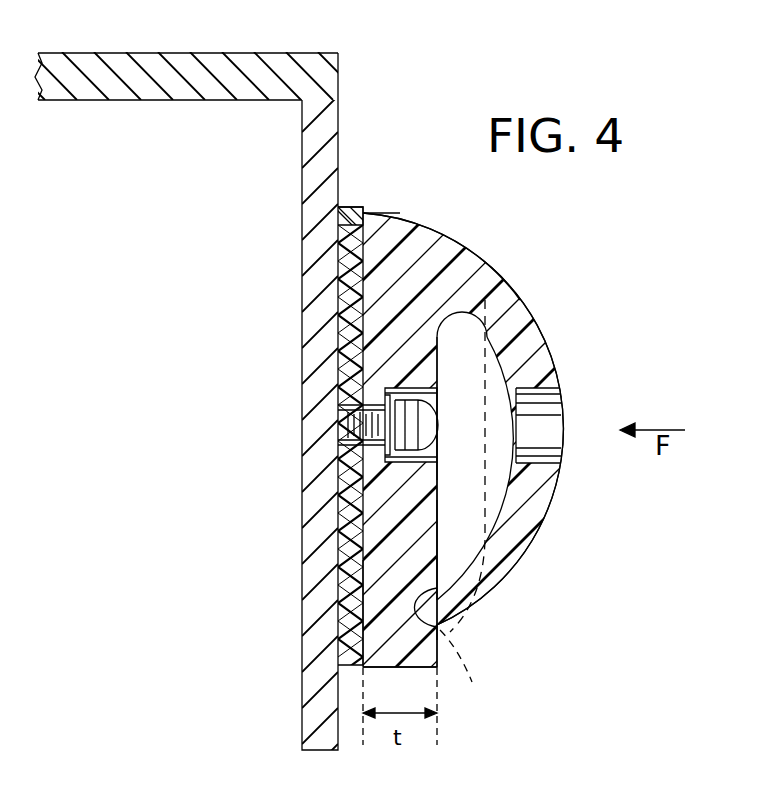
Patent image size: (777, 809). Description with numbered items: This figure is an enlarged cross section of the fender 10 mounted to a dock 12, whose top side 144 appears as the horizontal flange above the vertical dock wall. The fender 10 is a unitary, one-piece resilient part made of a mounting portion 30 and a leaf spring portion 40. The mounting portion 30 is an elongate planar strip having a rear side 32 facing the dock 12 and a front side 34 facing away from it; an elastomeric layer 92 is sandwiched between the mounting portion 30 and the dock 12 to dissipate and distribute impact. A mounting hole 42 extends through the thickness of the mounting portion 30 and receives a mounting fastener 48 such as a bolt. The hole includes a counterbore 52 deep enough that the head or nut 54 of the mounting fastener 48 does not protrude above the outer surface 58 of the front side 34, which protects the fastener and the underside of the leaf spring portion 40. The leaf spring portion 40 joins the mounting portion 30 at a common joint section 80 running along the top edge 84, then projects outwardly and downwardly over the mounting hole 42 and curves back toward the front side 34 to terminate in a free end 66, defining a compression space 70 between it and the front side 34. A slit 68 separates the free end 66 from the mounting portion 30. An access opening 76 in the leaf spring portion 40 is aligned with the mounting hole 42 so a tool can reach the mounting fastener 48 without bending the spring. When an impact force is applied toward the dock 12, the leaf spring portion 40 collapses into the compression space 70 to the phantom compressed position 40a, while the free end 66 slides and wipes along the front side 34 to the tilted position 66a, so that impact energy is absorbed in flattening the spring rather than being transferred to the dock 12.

The top side 144 is at (185, 52).
The dock 12 is at (301, 34).
The elastomeric layer 92 is at (352, 213).
The top edge 84 is at (377, 210).
The joint section 80 is at (422, 240).
The fender 10 is at (496, 230).
The head or nut 54 is at (410, 425).
The outer surface 58 is at (452, 361).
The compression space 70 is at (460, 420).
The access opening 76 is at (567, 406).
The mounting fastener 48 is at (360, 428).
The mounting hole 42 is at (387, 460).
The counterbore 52 is at (462, 470).
The leaf spring portion 40 is at (545, 505).
The rear side 32 is at (350, 542).
The front side 34 is at (448, 527).
The compressed position 40a is at (512, 585).
The mounting portion 30 is at (375, 605).
The free end 66 is at (445, 630).
The free end position 66a is at (473, 680).
The slit 68 is at (443, 640).